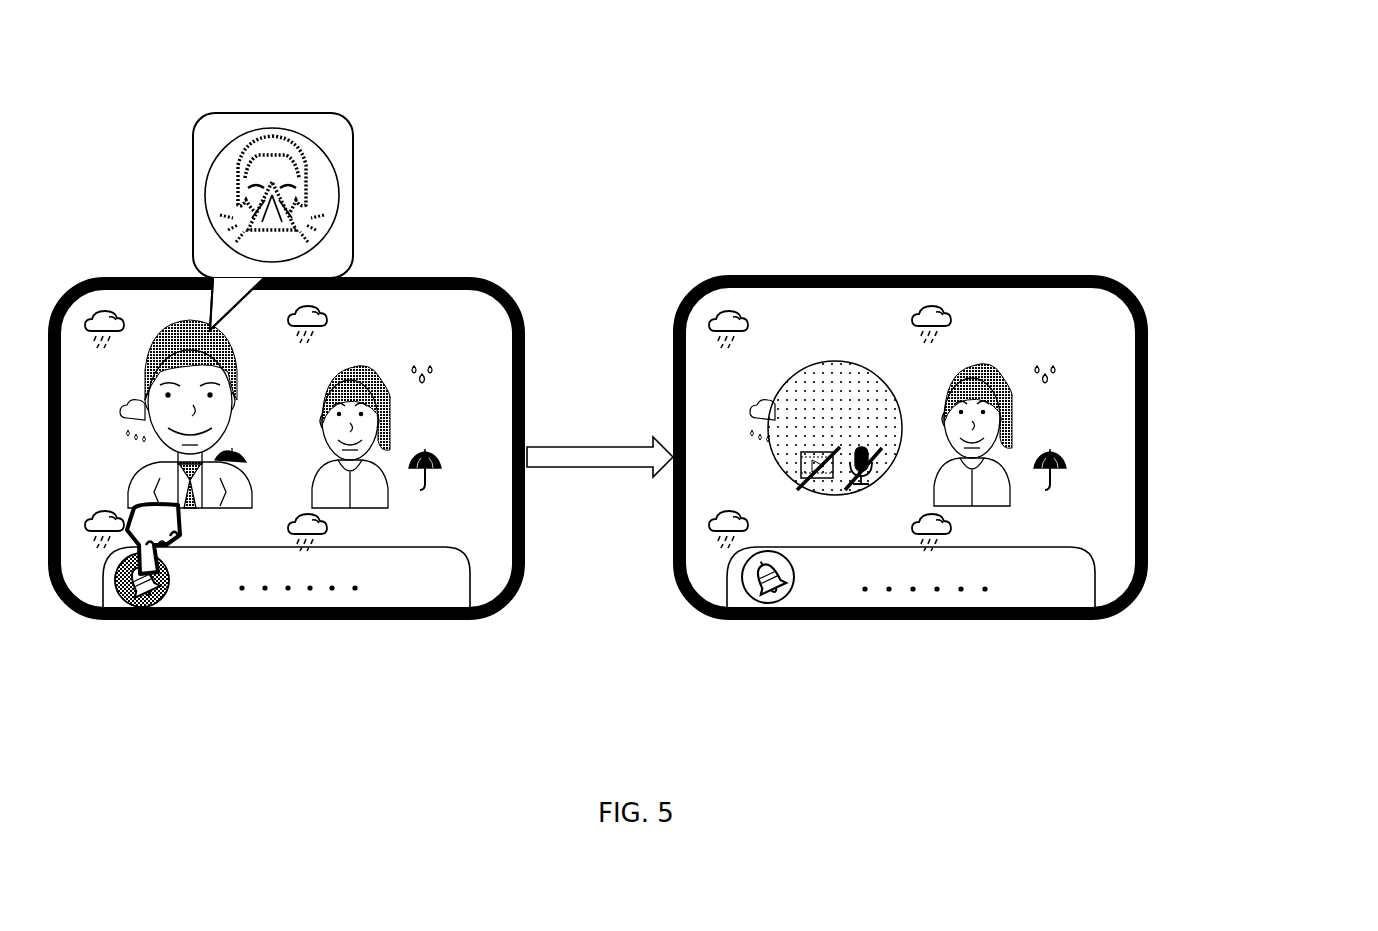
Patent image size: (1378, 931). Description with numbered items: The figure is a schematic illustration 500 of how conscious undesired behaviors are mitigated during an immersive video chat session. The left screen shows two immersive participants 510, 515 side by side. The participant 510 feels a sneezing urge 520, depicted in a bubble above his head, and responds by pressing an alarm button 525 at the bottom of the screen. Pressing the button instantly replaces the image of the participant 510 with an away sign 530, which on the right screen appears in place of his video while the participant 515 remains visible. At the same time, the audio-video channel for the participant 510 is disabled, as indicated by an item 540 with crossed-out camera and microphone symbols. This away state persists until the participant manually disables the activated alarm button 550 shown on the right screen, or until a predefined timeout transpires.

The schematic illustration 500 is at (1371, 108).
The participant 510 is at (167, 345).
The participant 515 is at (390, 336).
The sneezing urge 520 is at (338, 175).
The alarm button 525 is at (162, 607).
The away sign 530 is at (848, 362).
The item 540 is at (795, 463).
The activated alarm button 550 is at (788, 582).